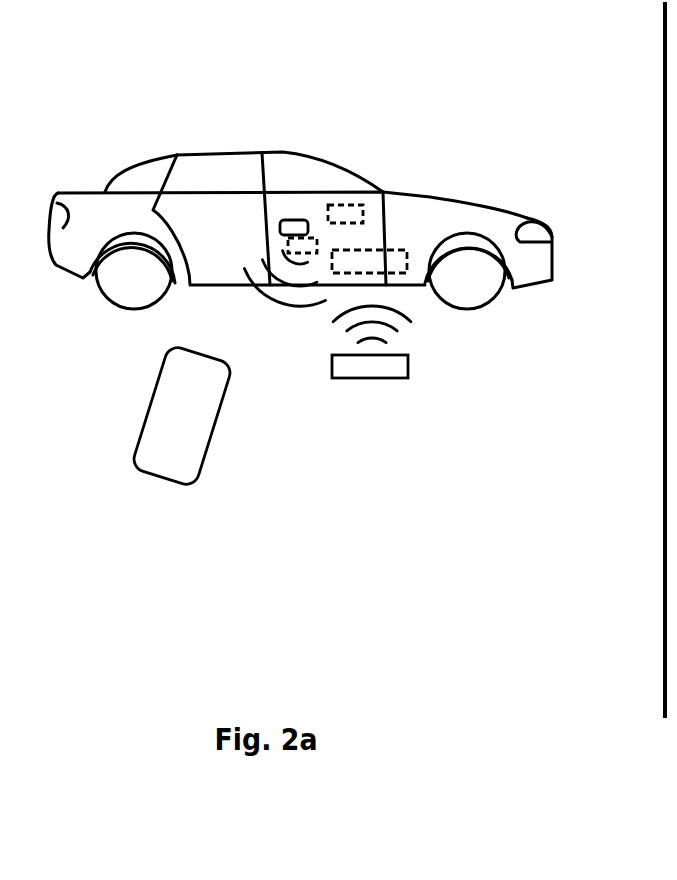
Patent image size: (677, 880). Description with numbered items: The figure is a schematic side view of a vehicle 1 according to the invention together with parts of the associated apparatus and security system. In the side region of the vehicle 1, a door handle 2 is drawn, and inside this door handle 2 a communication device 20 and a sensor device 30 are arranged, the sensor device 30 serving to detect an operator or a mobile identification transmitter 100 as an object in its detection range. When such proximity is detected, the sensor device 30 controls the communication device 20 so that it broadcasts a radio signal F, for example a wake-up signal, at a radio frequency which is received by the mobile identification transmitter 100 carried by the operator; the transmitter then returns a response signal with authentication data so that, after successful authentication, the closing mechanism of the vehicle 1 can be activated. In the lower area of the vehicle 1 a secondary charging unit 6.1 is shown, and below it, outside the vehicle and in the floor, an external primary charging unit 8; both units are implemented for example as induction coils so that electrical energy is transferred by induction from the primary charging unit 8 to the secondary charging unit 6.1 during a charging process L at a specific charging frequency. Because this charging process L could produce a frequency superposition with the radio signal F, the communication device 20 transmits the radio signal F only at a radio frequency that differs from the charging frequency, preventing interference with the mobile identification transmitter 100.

The vehicle 1 is at (543, 160).
The door handle 2 is at (283, 218).
The communication device 20 is at (318, 246).
The sensor device 30 is at (353, 203).
The secondary charging unit 6.1 is at (405, 248).
The primary charging unit 8 is at (382, 378).
The mobile identification transmitter 100 is at (205, 436).
The radio signal F is at (257, 289).
The charging process L is at (412, 332).